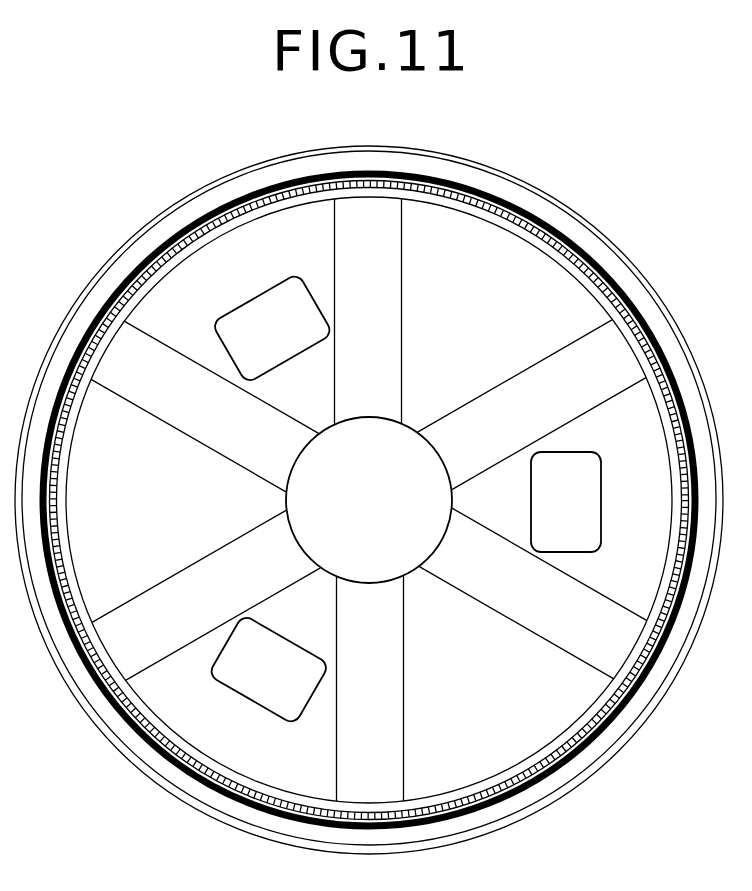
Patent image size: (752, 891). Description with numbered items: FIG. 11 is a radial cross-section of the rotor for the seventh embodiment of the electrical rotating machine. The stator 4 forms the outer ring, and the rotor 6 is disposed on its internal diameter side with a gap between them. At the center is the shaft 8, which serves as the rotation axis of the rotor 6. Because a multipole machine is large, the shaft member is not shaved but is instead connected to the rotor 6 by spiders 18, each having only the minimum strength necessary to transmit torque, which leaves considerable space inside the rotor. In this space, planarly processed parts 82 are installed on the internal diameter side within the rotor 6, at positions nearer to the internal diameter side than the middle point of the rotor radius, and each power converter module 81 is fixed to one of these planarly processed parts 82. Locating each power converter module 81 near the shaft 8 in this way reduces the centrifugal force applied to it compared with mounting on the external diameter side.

The stator 4 is at (535, 207).
The rotor 6 is at (523, 238).
The shaft 8 is at (393, 448).
The spider 18 is at (562, 635).
The power converter module 81 is at (601, 492).
The planarly processed part 82 is at (272, 392).